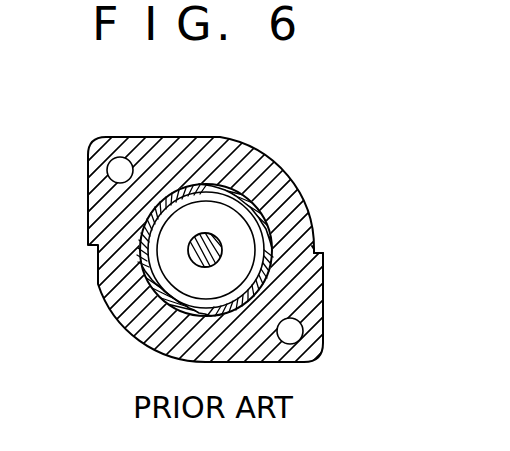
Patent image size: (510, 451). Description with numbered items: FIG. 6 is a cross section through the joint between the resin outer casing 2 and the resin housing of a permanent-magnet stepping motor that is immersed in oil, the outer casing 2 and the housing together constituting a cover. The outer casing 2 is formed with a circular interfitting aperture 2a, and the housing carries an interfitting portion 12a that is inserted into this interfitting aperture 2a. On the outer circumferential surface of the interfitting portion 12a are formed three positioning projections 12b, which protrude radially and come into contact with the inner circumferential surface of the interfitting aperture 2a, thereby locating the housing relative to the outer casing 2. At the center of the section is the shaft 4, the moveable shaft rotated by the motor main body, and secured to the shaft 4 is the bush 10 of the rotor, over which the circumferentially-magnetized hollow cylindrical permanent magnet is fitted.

The outer casing 2 is at (295, 213).
The interfitting aperture 2a is at (323, 271).
The shaft 4 is at (195, 276).
The bush 10 is at (203, 263).
The interfitting portion 12a is at (214, 184).
The positioning projections 12b is at (262, 148).